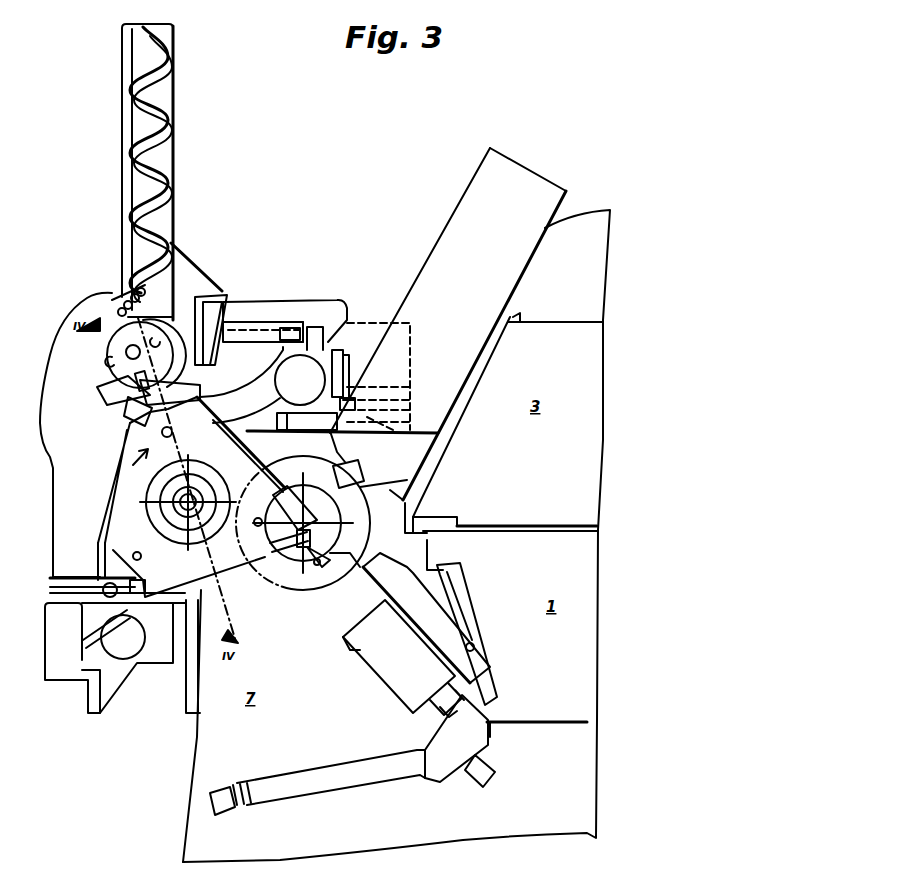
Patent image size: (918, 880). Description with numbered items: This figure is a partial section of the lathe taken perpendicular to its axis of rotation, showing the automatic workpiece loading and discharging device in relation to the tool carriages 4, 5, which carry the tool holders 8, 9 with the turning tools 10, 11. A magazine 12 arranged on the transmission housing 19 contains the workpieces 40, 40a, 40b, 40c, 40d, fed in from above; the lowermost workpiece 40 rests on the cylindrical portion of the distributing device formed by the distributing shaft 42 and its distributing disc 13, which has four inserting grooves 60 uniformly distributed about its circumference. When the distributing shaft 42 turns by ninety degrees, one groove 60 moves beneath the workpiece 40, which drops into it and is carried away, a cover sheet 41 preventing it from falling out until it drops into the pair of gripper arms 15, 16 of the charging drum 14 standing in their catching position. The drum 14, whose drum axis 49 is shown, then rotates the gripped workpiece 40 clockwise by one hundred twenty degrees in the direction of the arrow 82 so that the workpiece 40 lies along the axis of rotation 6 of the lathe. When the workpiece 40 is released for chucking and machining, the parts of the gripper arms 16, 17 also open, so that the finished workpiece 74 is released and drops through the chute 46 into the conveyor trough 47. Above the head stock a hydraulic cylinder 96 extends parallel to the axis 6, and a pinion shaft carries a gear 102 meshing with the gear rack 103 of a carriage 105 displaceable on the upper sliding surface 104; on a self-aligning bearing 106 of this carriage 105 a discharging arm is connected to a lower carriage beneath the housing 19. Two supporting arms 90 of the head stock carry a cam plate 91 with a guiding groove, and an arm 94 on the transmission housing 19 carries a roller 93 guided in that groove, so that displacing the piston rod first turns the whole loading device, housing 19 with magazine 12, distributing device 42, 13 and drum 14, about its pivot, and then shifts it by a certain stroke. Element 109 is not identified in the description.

The tool carriage 4 is at (470, 213).
The tool carriage 5 is at (392, 652).
The axis of rotation 6 is at (300, 535).
The tool holder 8 is at (380, 440).
The tool holder 9 is at (345, 607).
The turning tool 10 is at (380, 470).
The turning tool 11 is at (298, 555).
The magazine 12 is at (162, 104).
The distributing disc 13 is at (116, 340).
The charging drum 14 is at (125, 478).
The gripper arm 15 is at (290, 502).
The gripper arm 16 is at (105, 560).
The gripper arm 17 is at (134, 603).
The transmission housing 19 is at (62, 442).
The workpiece 40 is at (110, 314).
The workpiece 40a is at (118, 311).
The workpiece 40b is at (125, 303).
The workpiece 40c is at (132, 296).
The workpiece 40d is at (138, 290).
The cover sheet 41 is at (178, 320).
The distributing shaft 42 is at (126, 352).
The chute 46 is at (118, 660).
The conveyor trough 47 is at (55, 655).
The drum axis 49 is at (178, 509).
The inserting groove 60 is at (104, 389).
The finished workpiece 74 is at (100, 582).
The arrow 82 is at (151, 446).
The supporting arm 90 is at (296, 310).
The cam plate 91 is at (240, 388).
The roller 93 is at (289, 330).
The arm 94 is at (230, 345).
The hydraulic cylinder 96 is at (366, 335).
The gear 102 is at (346, 400).
The gear rack 103 is at (352, 402).
The sliding surface 104 is at (338, 352).
The carriage 105 is at (306, 378).
The self-aligning bearing 106 is at (300, 322).
The arm 109 is at (250, 428).